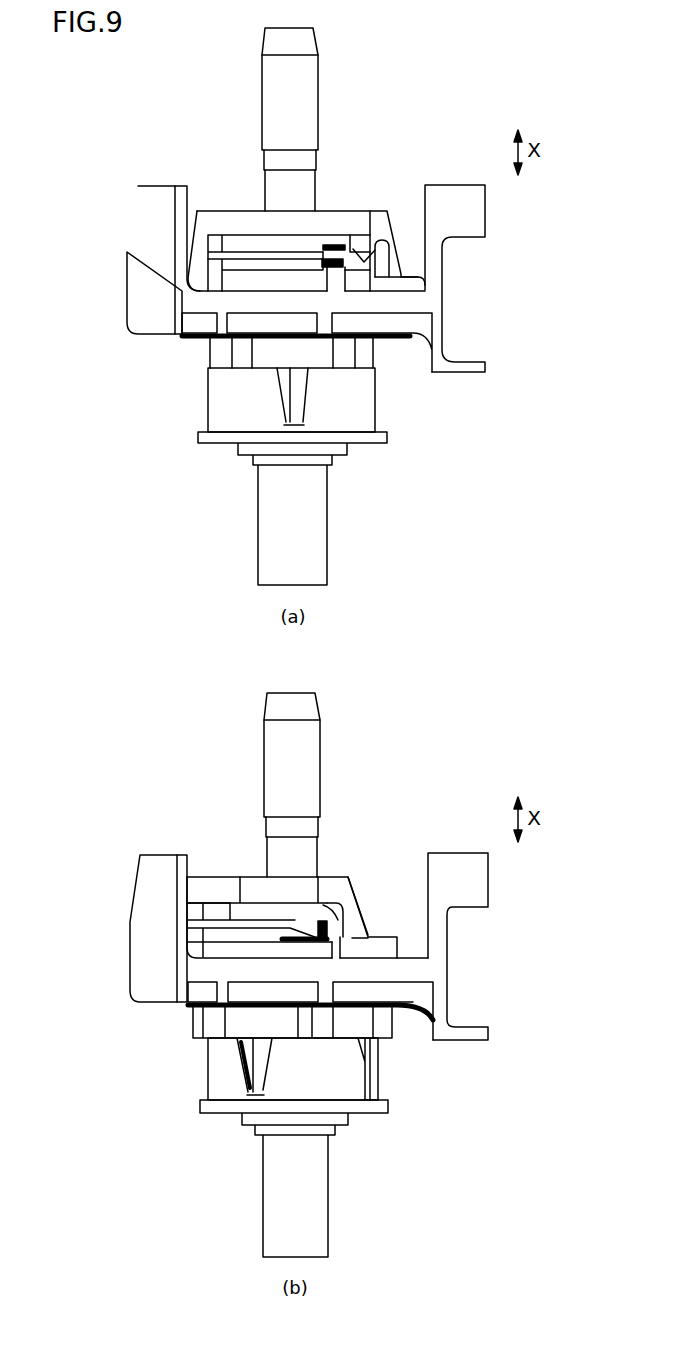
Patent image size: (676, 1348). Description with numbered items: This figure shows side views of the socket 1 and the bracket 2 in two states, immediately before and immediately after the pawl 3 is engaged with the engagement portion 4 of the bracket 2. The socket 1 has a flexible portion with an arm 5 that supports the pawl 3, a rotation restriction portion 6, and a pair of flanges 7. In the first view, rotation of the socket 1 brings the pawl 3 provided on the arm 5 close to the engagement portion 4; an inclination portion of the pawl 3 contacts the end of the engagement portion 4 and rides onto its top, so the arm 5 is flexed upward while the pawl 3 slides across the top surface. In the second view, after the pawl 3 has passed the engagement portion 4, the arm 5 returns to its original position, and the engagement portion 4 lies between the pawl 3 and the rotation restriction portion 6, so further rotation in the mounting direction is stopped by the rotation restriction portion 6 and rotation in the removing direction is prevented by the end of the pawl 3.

The socket 1 is at (338, 192).
The bracket 2 is at (471, 309).
The pawl 3 is at (372, 246).
The engagement portion 4 is at (335, 278).
The arm 5 is at (242, 257).
The rotation restriction portion 6 is at (393, 277).
The flange 7 is at (247, 282).